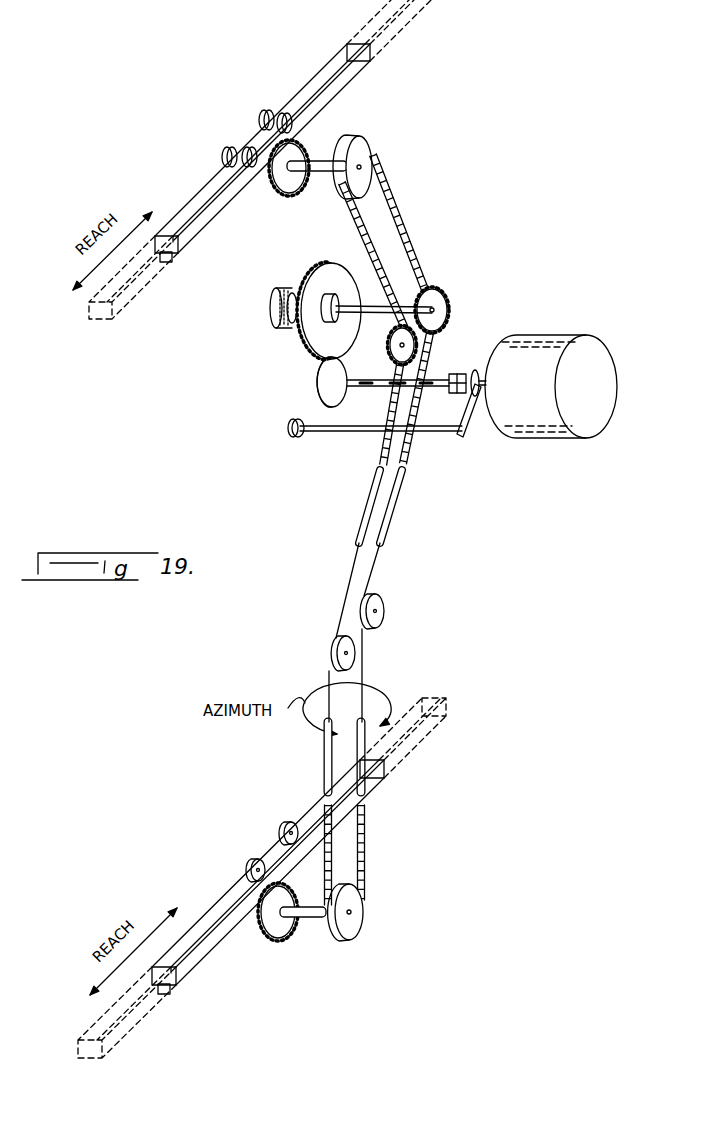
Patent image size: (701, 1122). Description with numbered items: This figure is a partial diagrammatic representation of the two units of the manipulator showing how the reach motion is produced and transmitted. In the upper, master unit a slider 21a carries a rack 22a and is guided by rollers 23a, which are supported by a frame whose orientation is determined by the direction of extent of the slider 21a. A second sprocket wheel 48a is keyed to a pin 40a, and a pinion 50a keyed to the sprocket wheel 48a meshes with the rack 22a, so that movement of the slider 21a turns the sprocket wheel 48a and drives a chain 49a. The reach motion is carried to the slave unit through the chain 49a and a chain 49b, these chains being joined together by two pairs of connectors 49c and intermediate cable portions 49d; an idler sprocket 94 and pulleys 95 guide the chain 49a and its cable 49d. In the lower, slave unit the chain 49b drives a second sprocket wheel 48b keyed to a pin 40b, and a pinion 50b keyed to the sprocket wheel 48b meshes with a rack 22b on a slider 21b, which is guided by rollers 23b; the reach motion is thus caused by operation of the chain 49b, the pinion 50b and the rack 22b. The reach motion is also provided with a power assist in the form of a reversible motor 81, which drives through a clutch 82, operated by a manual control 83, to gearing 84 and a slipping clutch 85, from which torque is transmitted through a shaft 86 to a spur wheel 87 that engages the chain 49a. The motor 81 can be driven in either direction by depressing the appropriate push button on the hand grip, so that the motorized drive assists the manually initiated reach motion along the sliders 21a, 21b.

The slider 21a is at (418, 19).
The rack 22a is at (167, 263).
The rollers 23a is at (280, 114).
The pin 40a is at (312, 162).
The second sprocket wheel 48a is at (361, 152).
The chain 49a is at (408, 228).
The pinion 50a is at (272, 196).
The motor 81 is at (536, 342).
The clutch 82 is at (458, 373).
The manual control 83 is at (300, 429).
The gearing 84 is at (330, 380).
The slipping clutch 85 is at (270, 312).
The shaft 86 is at (373, 305).
The spur wheel 87 is at (436, 300).
The idler sprocket 94 is at (396, 349).
The pulleys 95 is at (397, 630).
The connectors 49c is at (383, 500).
The intermediate cable portions 49d is at (366, 572).
The slider 21b is at (432, 737).
The rack 22b is at (168, 993).
The rollers 23b is at (284, 830).
The pin 40b is at (313, 920).
The second sprocket wheel 48b is at (354, 926).
The chain 49b is at (368, 848).
The pinion 50b is at (274, 942).